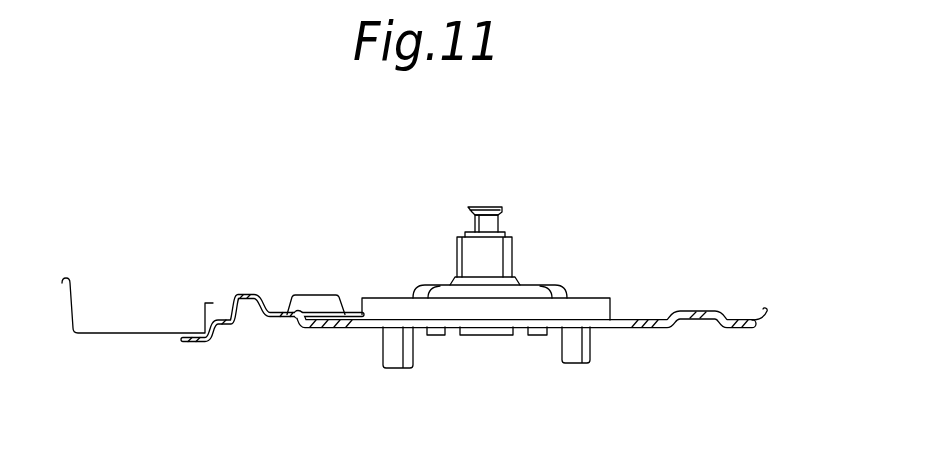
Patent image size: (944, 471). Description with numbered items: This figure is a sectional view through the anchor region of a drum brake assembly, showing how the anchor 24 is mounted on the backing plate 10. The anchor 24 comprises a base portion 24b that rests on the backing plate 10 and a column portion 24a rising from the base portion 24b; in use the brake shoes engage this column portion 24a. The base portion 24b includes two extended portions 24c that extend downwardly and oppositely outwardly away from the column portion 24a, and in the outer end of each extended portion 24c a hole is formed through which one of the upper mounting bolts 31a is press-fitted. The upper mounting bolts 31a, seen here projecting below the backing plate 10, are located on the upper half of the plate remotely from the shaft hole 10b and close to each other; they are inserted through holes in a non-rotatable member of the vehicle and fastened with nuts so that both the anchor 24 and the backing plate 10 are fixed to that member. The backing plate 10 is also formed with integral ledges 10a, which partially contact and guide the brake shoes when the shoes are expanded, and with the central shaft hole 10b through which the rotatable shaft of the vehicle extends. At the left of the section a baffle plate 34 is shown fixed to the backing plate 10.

The backing plate 10 is at (658, 328).
The ledge 10a is at (242, 293).
The shaft hole 10b is at (353, 329).
The anchor 24 is at (467, 232).
The column portion 24a is at (500, 257).
The base portion 24b is at (452, 295).
The extended portion 24c is at (387, 305).
The upper mounting bolt 31a is at (390, 353).
The baffle plate 34 is at (138, 337).